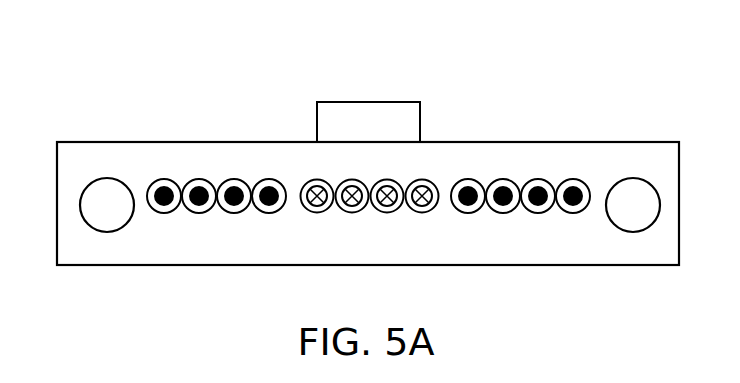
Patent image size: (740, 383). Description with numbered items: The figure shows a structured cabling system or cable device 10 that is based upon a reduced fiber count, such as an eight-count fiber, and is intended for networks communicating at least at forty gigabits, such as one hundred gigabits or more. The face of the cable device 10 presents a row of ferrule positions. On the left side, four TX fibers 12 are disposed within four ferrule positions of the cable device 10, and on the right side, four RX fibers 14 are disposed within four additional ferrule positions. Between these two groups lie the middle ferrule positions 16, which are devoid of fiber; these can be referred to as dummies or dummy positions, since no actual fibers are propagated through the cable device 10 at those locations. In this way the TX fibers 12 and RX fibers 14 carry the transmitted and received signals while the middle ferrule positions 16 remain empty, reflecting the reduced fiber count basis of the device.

The cable device 10 is at (80, 68).
The TX fibers 12 is at (150, 215).
The RX fibers 14 is at (588, 215).
The middle ferrule positions 16 is at (302, 215).